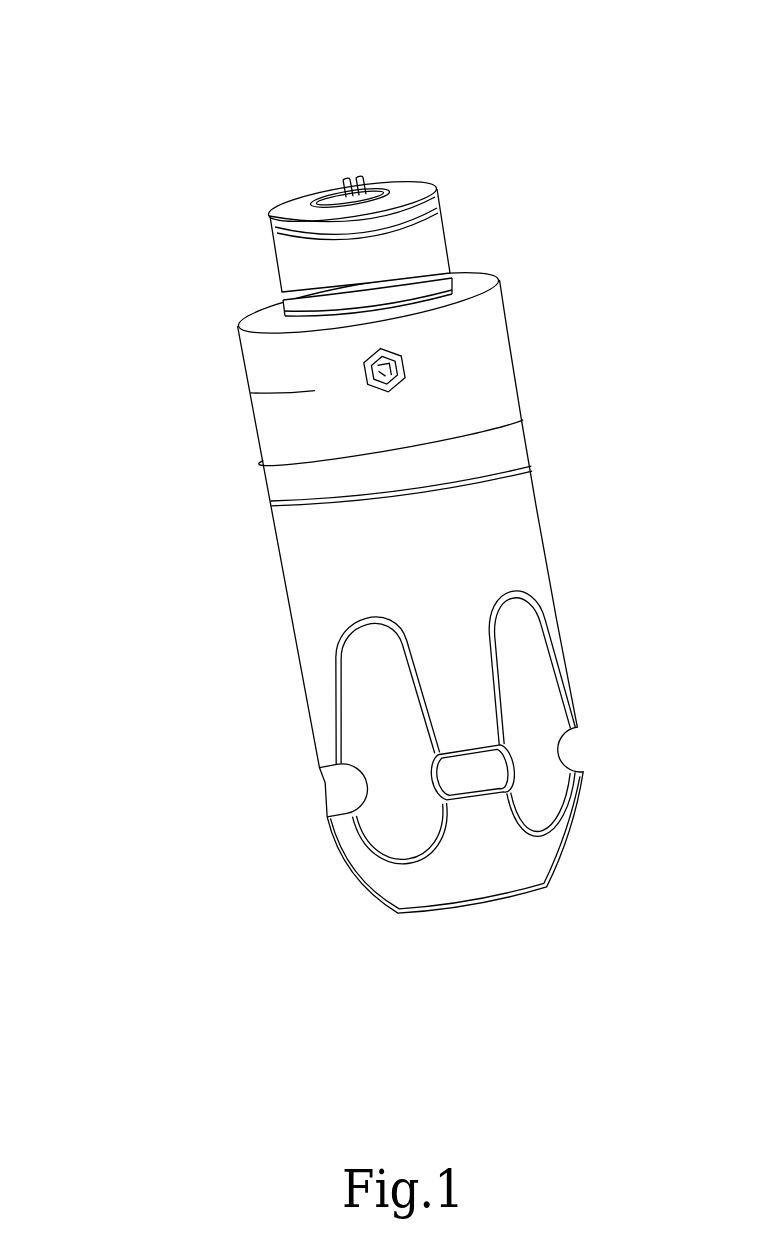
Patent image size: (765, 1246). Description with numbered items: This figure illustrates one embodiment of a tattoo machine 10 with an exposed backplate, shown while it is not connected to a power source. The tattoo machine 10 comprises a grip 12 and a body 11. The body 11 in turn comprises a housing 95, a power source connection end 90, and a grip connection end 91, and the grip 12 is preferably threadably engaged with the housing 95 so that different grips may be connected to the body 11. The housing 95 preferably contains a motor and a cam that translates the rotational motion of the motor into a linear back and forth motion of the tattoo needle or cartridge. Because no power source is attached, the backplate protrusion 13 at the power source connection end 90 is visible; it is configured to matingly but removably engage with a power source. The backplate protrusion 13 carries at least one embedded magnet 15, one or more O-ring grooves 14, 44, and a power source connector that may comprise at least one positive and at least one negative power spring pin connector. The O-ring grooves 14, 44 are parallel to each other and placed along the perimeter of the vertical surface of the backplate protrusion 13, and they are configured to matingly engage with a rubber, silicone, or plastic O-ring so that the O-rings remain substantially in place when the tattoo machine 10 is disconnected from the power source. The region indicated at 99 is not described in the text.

The tattoo machine 10 is at (112, 66).
The body 11 is at (225, 312).
The grip 12 is at (265, 712).
The backplate protrusion 13 is at (440, 236).
The O-ring groove 14 is at (272, 232).
The embedded magnet 15 is at (300, 205).
The O-ring groove 44 is at (292, 298).
The power source connection end 90 is at (218, 360).
The grip connection end 91 is at (538, 437).
The housing 95 is at (302, 438).
The connector assembly 99 is at (365, 148).